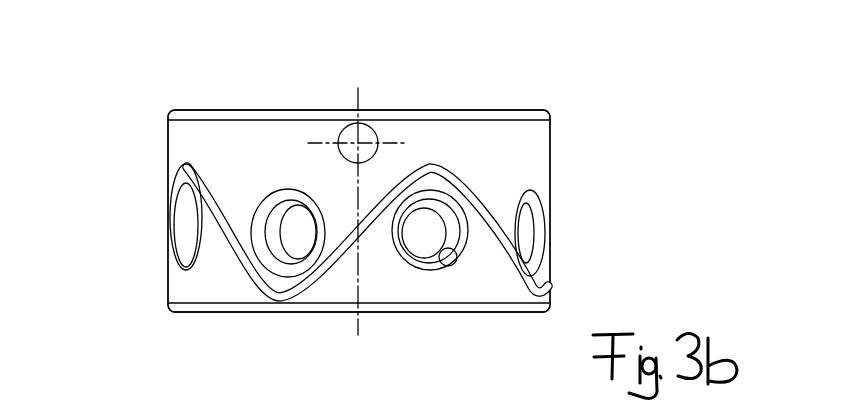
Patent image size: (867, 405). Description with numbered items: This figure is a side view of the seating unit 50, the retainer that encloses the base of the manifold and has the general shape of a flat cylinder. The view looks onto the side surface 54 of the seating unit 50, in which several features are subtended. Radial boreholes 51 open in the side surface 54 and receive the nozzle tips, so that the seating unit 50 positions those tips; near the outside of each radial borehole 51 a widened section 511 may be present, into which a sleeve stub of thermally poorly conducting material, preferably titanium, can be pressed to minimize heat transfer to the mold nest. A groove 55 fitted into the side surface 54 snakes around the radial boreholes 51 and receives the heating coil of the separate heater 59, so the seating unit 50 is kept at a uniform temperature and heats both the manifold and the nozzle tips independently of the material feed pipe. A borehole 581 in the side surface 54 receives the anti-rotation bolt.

The seating unit 50 is at (146, 90).
The radial borehole 51 is at (420, 236).
The widened section 511 is at (453, 248).
The side surface 54 is at (467, 148).
The groove 55 is at (413, 178).
The borehole 581 is at (348, 130).
The heater 59 is at (510, 108).